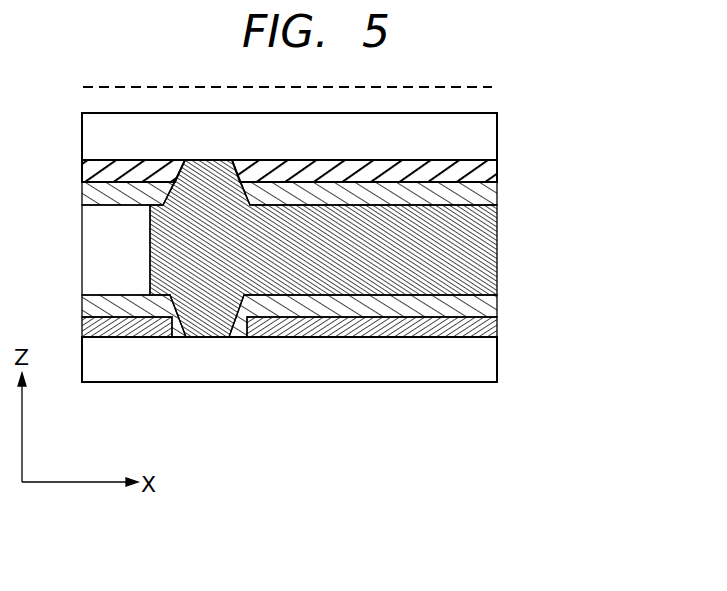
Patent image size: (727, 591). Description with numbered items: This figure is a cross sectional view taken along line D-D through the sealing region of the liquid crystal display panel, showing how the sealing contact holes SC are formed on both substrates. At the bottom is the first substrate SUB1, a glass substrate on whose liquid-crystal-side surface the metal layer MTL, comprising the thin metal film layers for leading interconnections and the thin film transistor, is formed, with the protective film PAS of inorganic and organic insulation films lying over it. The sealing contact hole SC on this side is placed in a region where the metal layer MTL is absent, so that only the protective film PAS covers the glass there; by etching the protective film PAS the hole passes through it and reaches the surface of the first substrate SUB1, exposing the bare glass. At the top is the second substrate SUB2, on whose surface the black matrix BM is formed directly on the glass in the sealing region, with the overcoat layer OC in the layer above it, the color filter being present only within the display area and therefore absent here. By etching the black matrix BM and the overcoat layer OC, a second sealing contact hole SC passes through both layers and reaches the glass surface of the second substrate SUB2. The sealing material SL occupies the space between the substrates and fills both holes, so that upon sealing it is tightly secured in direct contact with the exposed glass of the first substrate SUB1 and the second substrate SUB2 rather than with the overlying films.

The second substrate SUB2 is at (491, 126).
The black matrix BM is at (491, 173).
The overcoat layer OC is at (491, 190).
The sealing material SL is at (491, 255).
The protective film PAS is at (491, 305).
The metal layer MTL is at (491, 328).
The first substrate SUB1 is at (491, 360).
The sealing contact hole SC is at (243, 156).
The line D- D is at (290, 90).